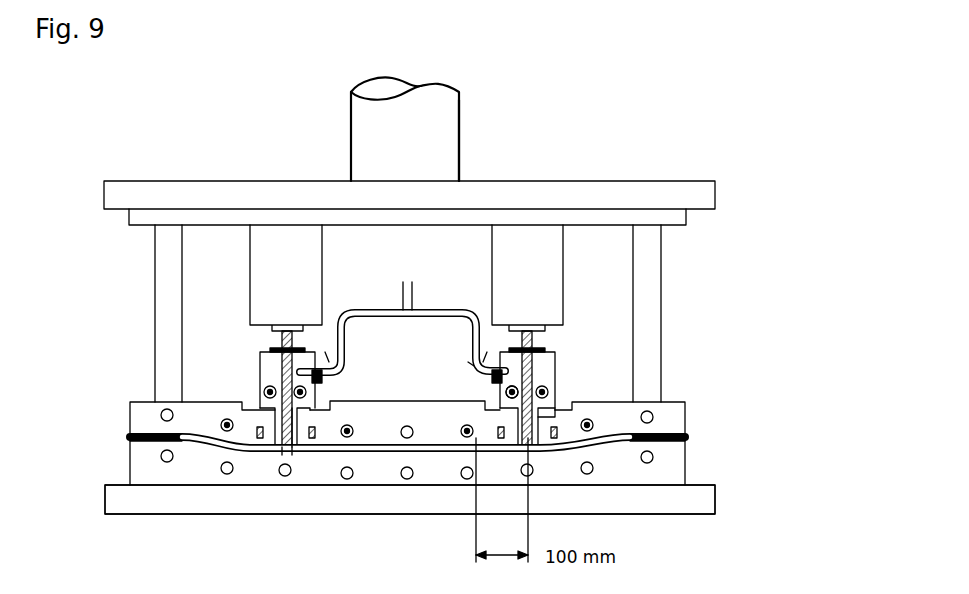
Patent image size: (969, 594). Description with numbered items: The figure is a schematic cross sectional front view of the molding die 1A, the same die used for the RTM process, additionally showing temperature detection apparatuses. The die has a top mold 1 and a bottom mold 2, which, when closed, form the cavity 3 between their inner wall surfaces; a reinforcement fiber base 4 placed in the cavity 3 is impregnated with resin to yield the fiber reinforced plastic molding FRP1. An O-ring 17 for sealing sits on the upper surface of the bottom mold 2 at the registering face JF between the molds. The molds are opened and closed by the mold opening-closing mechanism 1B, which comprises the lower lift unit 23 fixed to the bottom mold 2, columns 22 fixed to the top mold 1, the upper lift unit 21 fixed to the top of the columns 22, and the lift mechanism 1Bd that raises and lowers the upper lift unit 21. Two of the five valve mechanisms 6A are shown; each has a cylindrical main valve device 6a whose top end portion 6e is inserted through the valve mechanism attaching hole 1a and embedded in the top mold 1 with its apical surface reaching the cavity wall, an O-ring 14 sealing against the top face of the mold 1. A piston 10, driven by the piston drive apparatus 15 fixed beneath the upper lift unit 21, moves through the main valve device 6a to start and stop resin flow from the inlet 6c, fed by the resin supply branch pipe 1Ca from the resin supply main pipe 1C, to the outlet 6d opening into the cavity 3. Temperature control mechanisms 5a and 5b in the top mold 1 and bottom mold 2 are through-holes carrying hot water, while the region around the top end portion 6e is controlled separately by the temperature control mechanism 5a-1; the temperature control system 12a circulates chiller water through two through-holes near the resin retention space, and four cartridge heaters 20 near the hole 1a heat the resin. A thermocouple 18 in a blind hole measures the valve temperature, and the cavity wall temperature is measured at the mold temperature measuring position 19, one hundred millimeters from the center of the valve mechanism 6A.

The molding die 1A is at (596, 138).
The mold opening-closing mechanism 1B is at (392, 153).
The lift mechanism 1Bd is at (455, 110).
The resin supply main pipe 1C is at (403, 285).
The resin supply branch pipe 1Ca is at (423, 310).
The thermocouple 18 is at (508, 340).
The piston drive apparatus 15 is at (560, 270).
The upper lift unit 21 is at (148, 193).
The columns 22 is at (170, 258).
The valve mechanism 6A is at (553, 365).
The piston 10 is at (535, 343).
The main valve device 6a is at (553, 377).
The inlet 6c is at (468, 362).
The temperature control system 12a is at (506, 392).
The top end portion 6e is at (556, 426).
The O-ring 14 is at (545, 428).
The mold temperature measuring position 19 is at (578, 402).
The outlet 6d is at (542, 450).
The top mold 1 is at (138, 410).
The temperature control mechanism 5a is at (162, 415).
The temperature control mechanism 5a-1 is at (222, 428).
The bottom mold 2 is at (138, 458).
The lower lift unit 23 is at (168, 503).
The fiber reinforced plastic molding FRP1 is at (282, 452).
The cavity 3 is at (372, 455).
The cartridge heaters 20 is at (467, 436).
The reinforcement fiber base 4 is at (296, 430).
The valve mechanism attaching hole 1a is at (298, 452).
The temperature control mechanism 5b is at (590, 476).
The O-ring 17 is at (685, 438).
The registering face JF is at (657, 440).